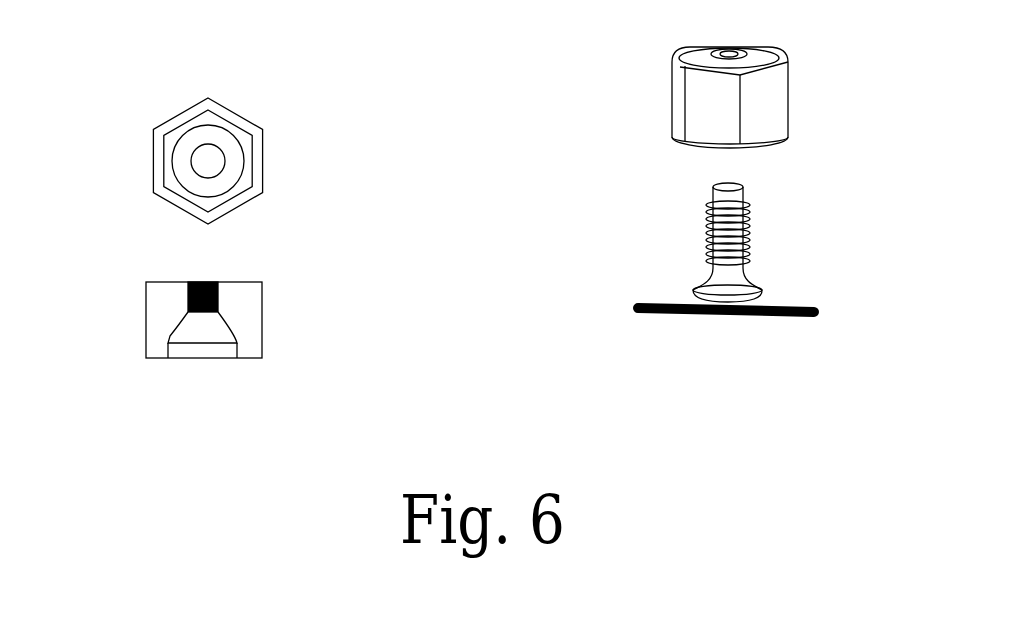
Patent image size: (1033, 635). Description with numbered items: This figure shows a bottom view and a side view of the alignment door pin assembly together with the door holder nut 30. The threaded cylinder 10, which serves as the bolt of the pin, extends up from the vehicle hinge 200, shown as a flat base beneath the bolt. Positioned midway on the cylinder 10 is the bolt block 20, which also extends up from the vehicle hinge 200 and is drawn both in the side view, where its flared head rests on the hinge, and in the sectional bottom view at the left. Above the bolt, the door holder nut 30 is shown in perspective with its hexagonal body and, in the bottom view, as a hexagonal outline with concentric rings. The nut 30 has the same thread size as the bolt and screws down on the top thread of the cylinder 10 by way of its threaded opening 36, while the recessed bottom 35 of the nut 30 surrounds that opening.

The threaded cylinder 10 is at (230, 293).
The bolt block 20 is at (183, 337).
The door holder nut 30 is at (185, 112).
The recessed bottom 35 is at (170, 162).
The threaded opening 36 is at (212, 160).
The vehicle hinge 200 is at (818, 298).